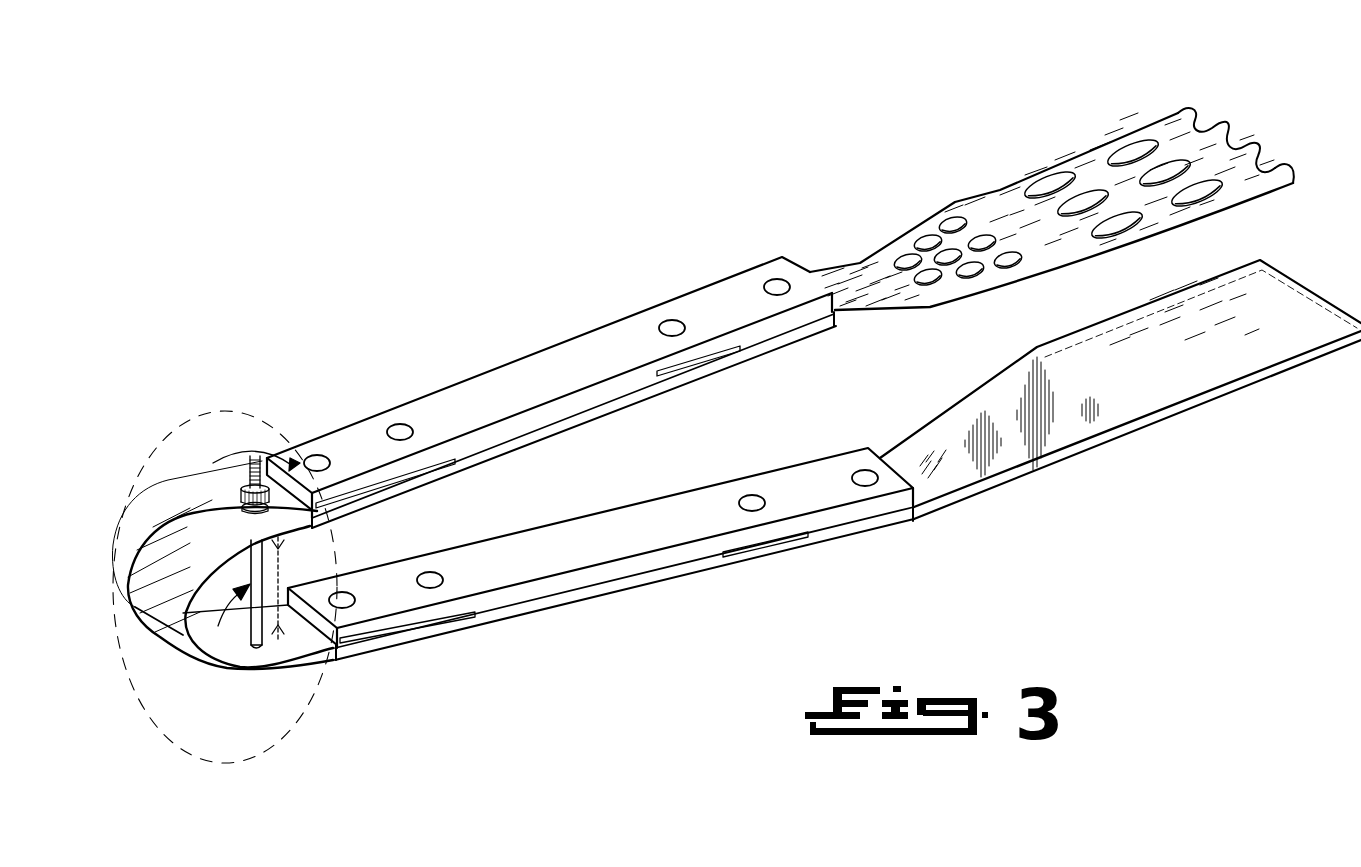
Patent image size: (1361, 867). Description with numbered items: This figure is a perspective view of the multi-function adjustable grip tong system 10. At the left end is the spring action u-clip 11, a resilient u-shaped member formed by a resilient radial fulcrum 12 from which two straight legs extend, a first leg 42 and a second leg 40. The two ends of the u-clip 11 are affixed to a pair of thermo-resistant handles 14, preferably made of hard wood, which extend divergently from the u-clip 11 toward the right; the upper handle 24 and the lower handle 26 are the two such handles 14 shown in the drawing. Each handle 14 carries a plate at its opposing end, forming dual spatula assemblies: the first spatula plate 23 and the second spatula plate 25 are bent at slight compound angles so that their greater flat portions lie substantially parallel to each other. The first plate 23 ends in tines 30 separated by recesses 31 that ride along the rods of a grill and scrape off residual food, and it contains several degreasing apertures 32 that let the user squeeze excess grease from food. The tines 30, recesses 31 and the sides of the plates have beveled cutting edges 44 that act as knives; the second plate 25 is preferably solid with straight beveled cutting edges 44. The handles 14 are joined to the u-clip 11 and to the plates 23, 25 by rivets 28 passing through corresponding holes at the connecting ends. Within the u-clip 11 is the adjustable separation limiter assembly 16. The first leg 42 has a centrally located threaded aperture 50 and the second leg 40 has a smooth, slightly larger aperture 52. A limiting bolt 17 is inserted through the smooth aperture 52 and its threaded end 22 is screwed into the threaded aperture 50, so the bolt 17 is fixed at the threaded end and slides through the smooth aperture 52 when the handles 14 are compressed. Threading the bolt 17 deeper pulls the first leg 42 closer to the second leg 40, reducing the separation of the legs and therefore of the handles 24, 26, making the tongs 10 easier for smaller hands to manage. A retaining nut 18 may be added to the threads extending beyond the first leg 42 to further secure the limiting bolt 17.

The multi-function adjustable grip tong system 10 is at (149, 746).
The spring action u-clip 11 is at (266, 673).
The resilient radial fulcrum 12 is at (155, 613).
The thermo-resistant handle 14 is at (488, 394).
The adjustable separation limiter assembly 16 is at (228, 620).
The limiting bolt 17 is at (262, 566).
The retaining nut 18 is at (238, 495).
The threaded end 22 is at (256, 456).
The first spatula plate 23 is at (1008, 196).
The upper arm bar 24 is at (619, 316).
The second spatula plate 25 is at (1000, 396).
The lower arm bar 26 is at (683, 487).
The rivet 28 is at (426, 578).
The tines 30 is at (1228, 133).
The recesses 31 is at (1250, 168).
The degreasing apertures 32 is at (912, 258).
The second leg 40 is at (297, 662).
The first leg 42 is at (243, 487).
The beveled cutting edges 44 is at (1287, 274).
The threaded aperture 50 is at (245, 511).
The smooth aperture 52 is at (272, 650).